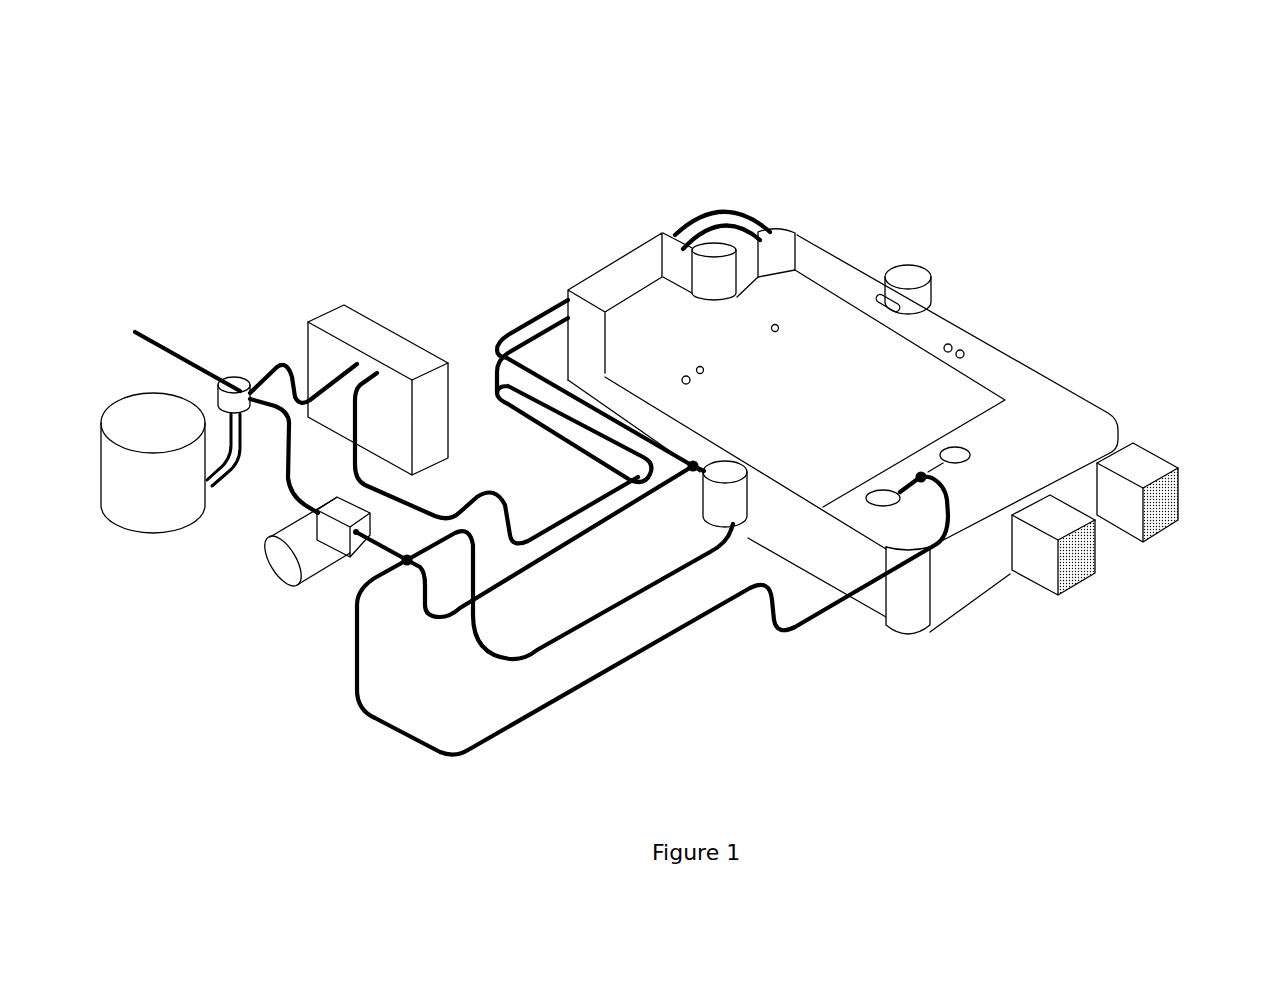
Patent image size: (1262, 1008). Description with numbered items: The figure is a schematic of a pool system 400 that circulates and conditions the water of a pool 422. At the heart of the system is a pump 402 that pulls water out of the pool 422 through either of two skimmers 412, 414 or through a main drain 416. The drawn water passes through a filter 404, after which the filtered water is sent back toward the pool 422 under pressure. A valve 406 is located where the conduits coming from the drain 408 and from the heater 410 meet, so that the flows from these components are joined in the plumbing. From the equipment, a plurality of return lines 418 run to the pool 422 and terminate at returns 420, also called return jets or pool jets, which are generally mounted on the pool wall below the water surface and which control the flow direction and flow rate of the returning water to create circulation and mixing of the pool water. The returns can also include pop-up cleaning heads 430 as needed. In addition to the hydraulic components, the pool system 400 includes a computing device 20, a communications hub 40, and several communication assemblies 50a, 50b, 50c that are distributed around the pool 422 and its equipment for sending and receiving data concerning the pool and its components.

The pool system 400 is at (628, 108).
The pump 402 is at (280, 565).
The filter 404 is at (130, 427).
The valve 406 is at (238, 382).
The drain 408 is at (137, 330).
The heater 410 is at (430, 420).
The skimmer 412 is at (773, 480).
The skimmer 414 is at (905, 277).
The main drain 416 is at (947, 449).
The return lines 418 is at (520, 323).
The returns 420 is at (963, 352).
The pool 422 is at (1002, 392).
The pop-up cleaning heads 430 is at (703, 368).
The communication assembly 50a is at (821, 455).
The communication assembly 50b is at (685, 375).
The communication assembly 50c is at (948, 343).
The computing device 20 is at (1080, 553).
The communications hub 40 is at (1167, 508).